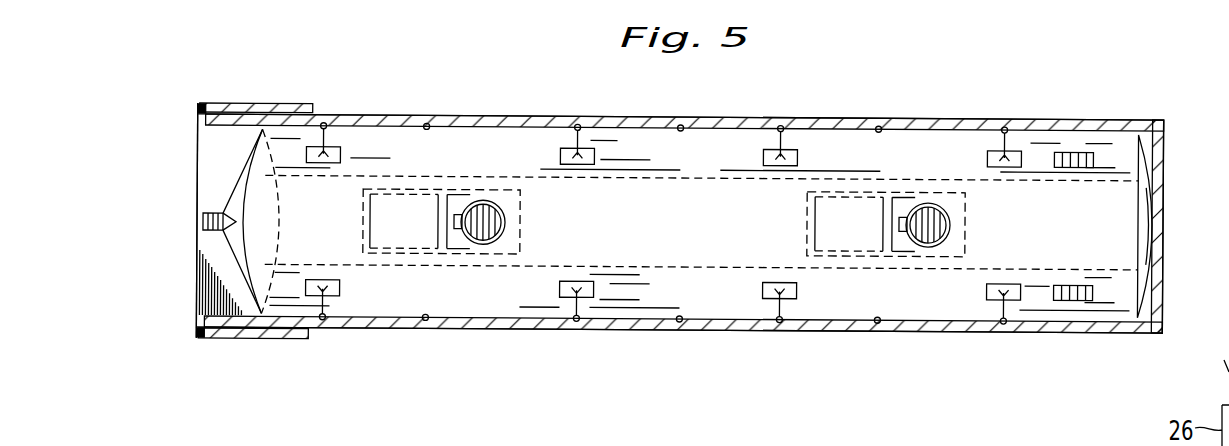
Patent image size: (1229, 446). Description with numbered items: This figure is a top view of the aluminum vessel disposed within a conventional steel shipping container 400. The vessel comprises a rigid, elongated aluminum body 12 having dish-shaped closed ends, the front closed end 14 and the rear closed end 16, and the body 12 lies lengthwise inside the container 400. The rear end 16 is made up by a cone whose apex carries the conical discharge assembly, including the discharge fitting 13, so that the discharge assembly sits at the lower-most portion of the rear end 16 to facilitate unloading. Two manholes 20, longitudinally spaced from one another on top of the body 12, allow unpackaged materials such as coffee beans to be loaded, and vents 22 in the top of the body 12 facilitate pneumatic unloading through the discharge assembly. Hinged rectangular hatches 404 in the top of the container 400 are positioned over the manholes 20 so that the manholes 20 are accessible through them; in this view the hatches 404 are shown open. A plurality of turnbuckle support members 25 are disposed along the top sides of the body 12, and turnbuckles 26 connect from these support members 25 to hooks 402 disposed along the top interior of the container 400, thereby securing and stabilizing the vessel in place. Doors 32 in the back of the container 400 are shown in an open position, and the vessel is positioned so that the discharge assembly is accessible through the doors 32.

The aluminum body 12 is at (677, 236).
The discharge fitting 13 is at (204, 216).
The front closed end 14 is at (1154, 150).
The rear closed end 16 is at (233, 160).
The manhole 20 is at (505, 222).
The vent 22 is at (1077, 151).
The turnbuckle support member 25 is at (343, 157).
The turnbuckle 26 is at (323, 135).
The door 32 is at (224, 104).
The steel shipping container 400 is at (1114, 339).
The hook 402 is at (323, 124).
The hinged rectangular hatch 404 is at (364, 212).